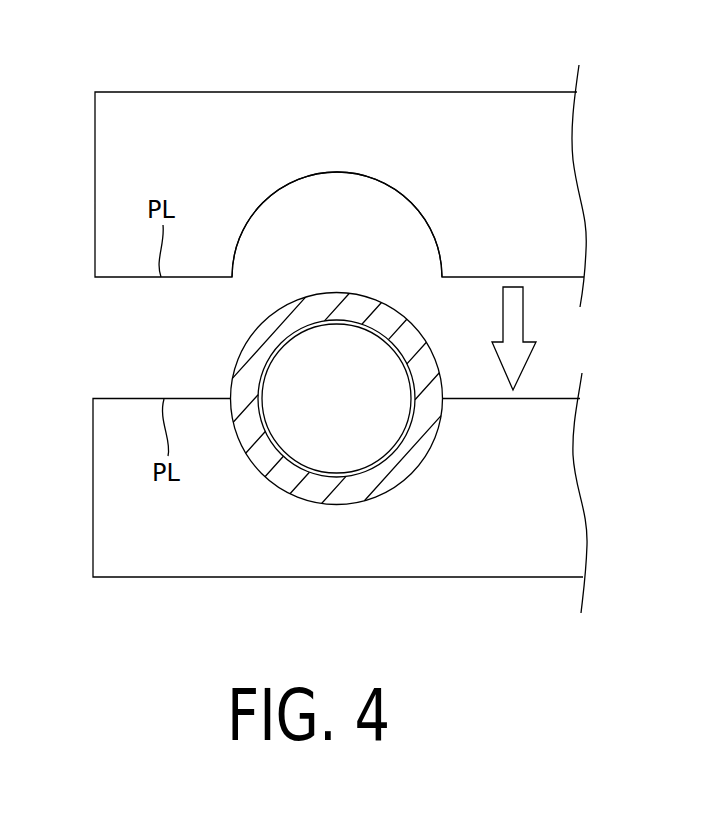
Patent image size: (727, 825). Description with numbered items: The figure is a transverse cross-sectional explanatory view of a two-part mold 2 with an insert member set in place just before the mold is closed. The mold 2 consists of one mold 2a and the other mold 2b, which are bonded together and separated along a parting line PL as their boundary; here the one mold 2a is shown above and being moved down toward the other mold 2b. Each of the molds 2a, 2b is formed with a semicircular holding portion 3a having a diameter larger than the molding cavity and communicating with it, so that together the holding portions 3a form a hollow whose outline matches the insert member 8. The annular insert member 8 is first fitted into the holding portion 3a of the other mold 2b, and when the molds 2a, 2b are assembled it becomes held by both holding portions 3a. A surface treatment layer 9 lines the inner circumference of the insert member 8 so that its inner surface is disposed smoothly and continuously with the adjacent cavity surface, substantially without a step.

The mold 2 is at (308, 308).
The one mold 2a is at (100, 210).
The other mold 2b is at (105, 502).
The holding portion 3a is at (408, 199).
The insert member 8 is at (258, 352).
The surface treatment layer 9 is at (314, 477).